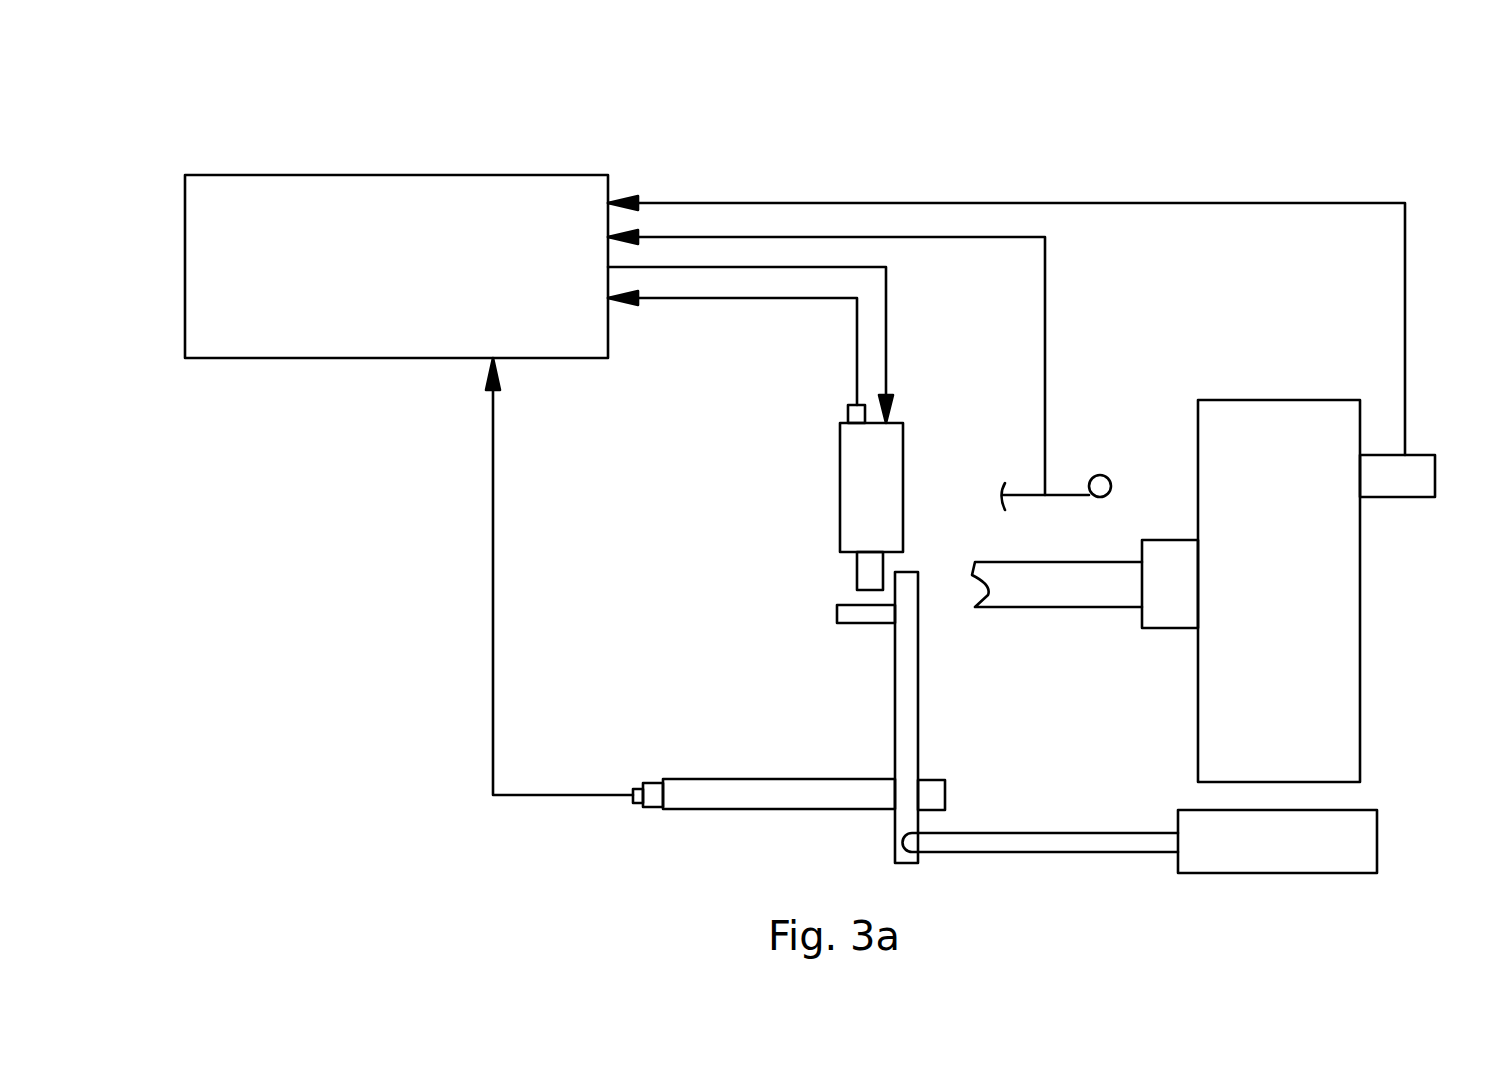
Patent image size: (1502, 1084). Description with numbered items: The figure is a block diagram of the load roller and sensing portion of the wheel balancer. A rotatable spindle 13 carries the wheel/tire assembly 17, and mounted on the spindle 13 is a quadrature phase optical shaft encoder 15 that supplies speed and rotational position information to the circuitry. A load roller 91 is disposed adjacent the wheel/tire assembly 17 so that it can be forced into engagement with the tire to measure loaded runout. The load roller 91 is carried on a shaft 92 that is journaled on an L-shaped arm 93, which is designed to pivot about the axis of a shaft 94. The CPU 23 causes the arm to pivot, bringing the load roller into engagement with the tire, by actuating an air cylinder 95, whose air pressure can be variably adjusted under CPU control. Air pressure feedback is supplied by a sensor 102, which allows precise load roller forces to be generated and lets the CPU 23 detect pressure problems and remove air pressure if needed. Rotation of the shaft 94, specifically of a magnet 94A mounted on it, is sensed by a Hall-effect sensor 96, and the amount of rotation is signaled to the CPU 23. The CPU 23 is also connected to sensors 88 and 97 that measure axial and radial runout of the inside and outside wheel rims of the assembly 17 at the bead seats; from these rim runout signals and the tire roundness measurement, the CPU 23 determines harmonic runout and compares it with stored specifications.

The CPU 23 is at (390, 175).
The sensor 102 is at (852, 405).
The air cylinder 95 is at (840, 497).
The L-shaped arm 93 is at (918, 683).
The shaft 94 is at (717, 809).
The magnet 94A is at (650, 807).
The sensor 96 is at (640, 808).
The shaft 92 is at (1018, 852).
The load roller 91 is at (1277, 873).
The wheel/tire assembly 17 is at (1360, 635).
The optical shaft encoder 15 is at (1162, 540).
The spindle 13 is at (1055, 607).
The sensor 88 is at (1068, 495).
The sensor 97 is at (1420, 455).